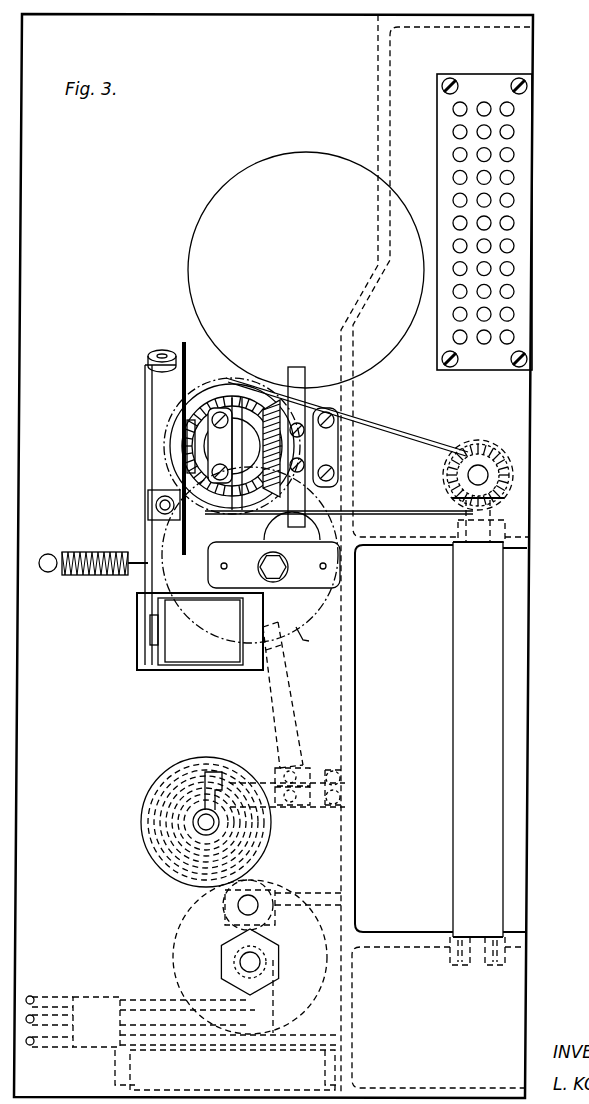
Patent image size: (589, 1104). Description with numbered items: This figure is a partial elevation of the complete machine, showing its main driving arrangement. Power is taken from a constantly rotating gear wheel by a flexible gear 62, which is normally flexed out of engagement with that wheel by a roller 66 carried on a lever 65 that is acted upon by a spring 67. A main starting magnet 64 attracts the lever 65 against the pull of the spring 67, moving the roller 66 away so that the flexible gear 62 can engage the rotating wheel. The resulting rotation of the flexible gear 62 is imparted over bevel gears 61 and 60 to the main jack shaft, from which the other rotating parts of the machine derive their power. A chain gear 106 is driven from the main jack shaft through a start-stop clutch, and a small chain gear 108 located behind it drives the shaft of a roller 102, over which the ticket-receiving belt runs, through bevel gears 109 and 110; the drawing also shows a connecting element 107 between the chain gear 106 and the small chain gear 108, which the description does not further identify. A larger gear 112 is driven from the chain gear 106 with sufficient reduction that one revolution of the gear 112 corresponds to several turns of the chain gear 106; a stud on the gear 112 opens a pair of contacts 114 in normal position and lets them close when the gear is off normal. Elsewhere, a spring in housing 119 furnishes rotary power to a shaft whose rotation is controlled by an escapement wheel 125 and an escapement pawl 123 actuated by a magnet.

The bevel gear 60 is at (266, 405).
The bevel gear 61 is at (305, 396).
The flexible gear 62 is at (186, 382).
The main starting magnet 64 is at (210, 640).
The lever 65 is at (143, 540).
The roller 66 is at (165, 350).
The spring 67 is at (108, 576).
The roller 102 is at (492, 910).
The chain gear 106 is at (247, 392).
The belt 107 is at (395, 424).
The small chain gear 108 is at (467, 450).
The bevel gear 109 is at (500, 463).
The bevel gear 110 is at (504, 499).
The larger gear 112 is at (316, 643).
The contacts 114 is at (288, 706).
The housing 119 is at (176, 857).
The escapement pawl 123 is at (284, 925).
The escapement wheel 125 is at (240, 953).